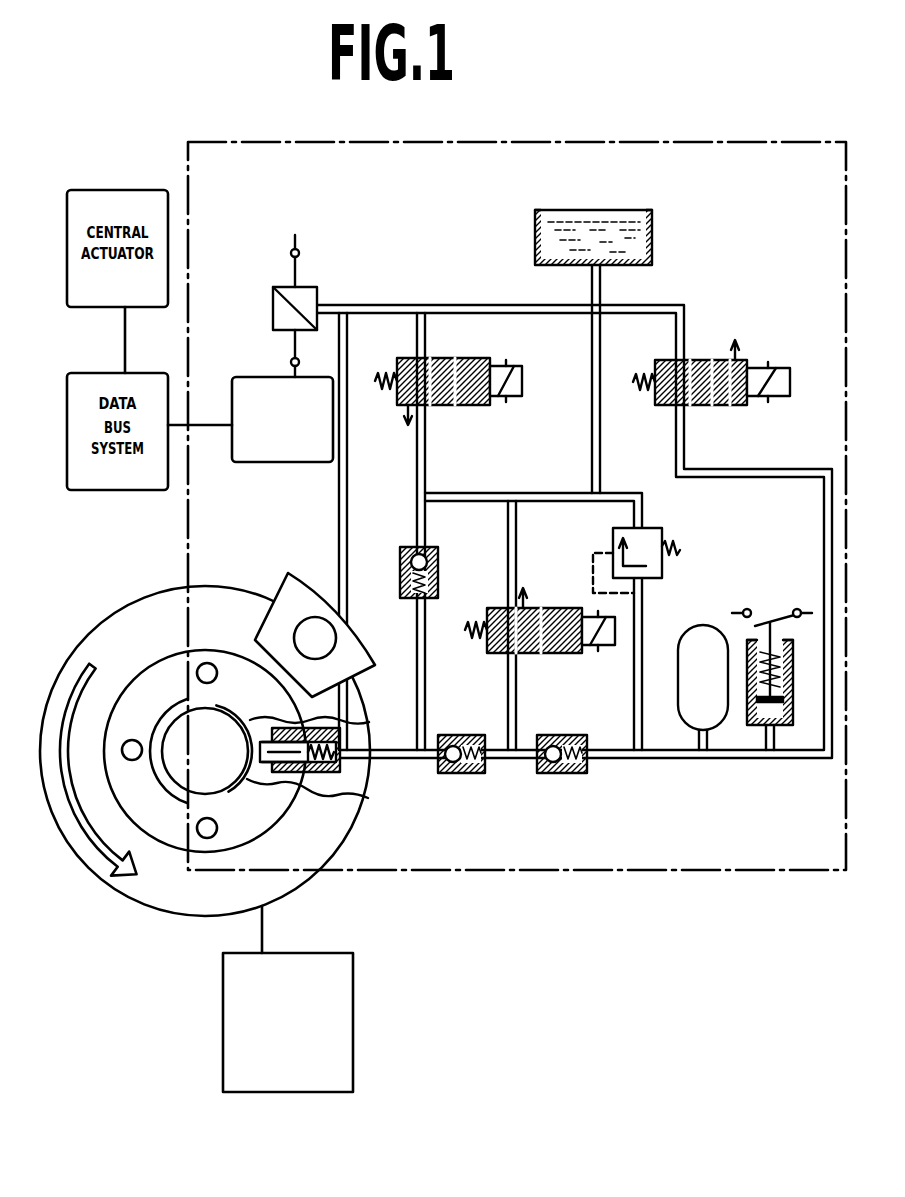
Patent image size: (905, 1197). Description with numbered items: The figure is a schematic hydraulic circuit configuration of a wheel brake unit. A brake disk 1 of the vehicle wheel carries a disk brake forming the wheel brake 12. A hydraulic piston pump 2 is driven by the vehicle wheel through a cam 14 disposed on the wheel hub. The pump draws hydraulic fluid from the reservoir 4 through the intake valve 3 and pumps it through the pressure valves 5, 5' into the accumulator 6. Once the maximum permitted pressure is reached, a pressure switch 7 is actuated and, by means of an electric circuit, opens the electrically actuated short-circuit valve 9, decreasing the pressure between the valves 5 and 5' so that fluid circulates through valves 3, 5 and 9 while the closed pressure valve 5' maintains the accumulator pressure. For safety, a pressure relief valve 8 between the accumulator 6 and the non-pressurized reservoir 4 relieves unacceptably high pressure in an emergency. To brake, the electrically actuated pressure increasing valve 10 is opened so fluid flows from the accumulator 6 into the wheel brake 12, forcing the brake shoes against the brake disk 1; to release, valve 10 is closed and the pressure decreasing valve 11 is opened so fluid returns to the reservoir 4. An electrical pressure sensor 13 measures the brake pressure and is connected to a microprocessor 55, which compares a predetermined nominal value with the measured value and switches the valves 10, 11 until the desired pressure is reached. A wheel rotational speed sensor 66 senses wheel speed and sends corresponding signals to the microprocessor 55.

The brake disk 1 is at (163, 893).
The hydraulic piston pump 2 is at (310, 773).
The intake valve 3 is at (402, 577).
The reservoir 4 is at (538, 236).
The pressure valve 5 is at (461, 773).
The pressure valve 5' is at (563, 773).
The accumulator 6 is at (695, 697).
The pressure switch 7 is at (793, 707).
The pressure relief valve 8 is at (648, 580).
The short-circuit valve 9 is at (500, 655).
The pressure increasing valve 10 is at (700, 362).
The pressure decreasing valve 11 is at (445, 360).
The wheel brake 12 is at (306, 590).
The pressure sensor 13 is at (285, 322).
The cam 14 is at (253, 796).
The microprocessor 55 is at (276, 463).
The wheel rotational speed sensor 66 is at (223, 1045).